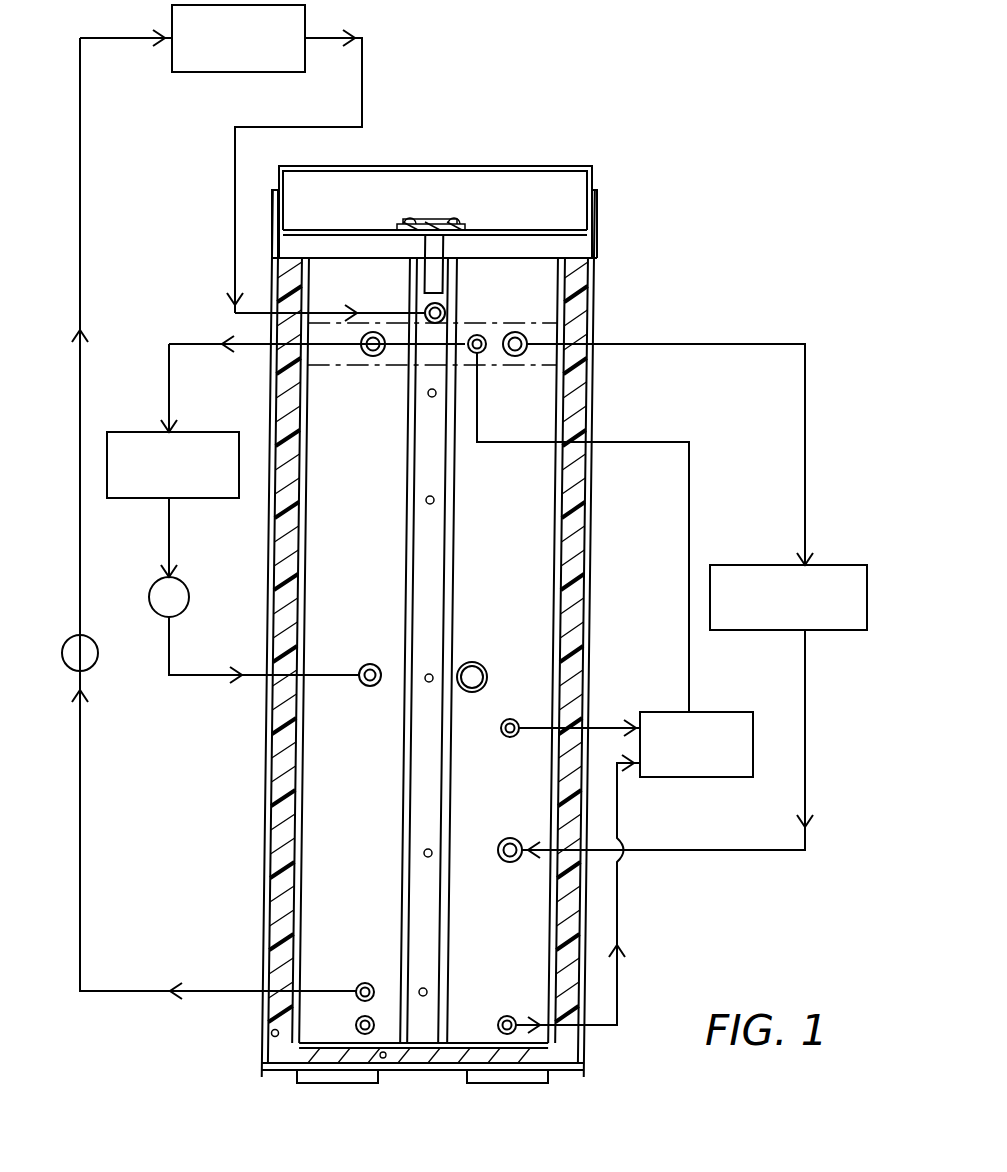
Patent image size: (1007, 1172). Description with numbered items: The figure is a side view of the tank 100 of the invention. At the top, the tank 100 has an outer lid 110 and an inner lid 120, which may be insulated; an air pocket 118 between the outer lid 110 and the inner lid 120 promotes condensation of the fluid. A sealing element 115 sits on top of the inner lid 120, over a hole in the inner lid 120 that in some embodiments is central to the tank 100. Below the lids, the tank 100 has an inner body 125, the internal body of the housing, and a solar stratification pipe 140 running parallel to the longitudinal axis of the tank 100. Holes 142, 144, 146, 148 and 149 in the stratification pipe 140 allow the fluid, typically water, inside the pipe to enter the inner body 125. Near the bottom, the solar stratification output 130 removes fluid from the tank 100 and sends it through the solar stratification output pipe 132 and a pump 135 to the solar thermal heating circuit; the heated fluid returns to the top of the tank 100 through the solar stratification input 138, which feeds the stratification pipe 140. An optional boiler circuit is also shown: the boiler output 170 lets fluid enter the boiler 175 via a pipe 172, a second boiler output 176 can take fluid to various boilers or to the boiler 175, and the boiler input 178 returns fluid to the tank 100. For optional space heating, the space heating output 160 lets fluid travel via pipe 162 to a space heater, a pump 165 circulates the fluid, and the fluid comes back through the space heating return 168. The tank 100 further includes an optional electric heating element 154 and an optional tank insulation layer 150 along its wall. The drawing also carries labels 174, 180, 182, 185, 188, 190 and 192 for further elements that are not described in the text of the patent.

The tank 100 is at (615, 158).
The outer lid 110 is at (380, 168).
The sealing element 115 is at (440, 218).
The air pocket 118 is at (433, 185).
The inner lid 120 is at (320, 232).
The inner body 125 is at (330, 793).
The solar stratification output 130 is at (370, 984).
The solar stratification output pipe 132 is at (82, 865).
The pump 135 is at (98, 660).
The solar stratification input 138 is at (444, 306).
The solar stratification pipe 140 is at (430, 465).
The hole 142 is at (432, 397).
The hole 144 is at (434, 500).
The hole 146 is at (430, 682).
The hole 148 is at (432, 856).
The hole 149 is at (427, 991).
The tank insulation layer 150 is at (582, 556).
The electric heating element 154 is at (474, 670).
The space heating output 160 is at (373, 358).
The pipe 162 is at (169, 385).
The pump 165 is at (188, 600).
The space heating return 168 is at (370, 663).
The boiler output 170 is at (512, 718).
The pipe 172 is at (605, 725).
The boiler return inlet 174 is at (570, 1030).
The boiler 175 is at (705, 712).
The boiler output 176 is at (357, 1024).
The boiler input 178 is at (485, 365).
The domestic hot water outlet 180 is at (527, 338).
The domestic hot water supply line 182 is at (762, 344).
The domestic hot water load 185 is at (840, 565).
The domestic hot water return inlet 188 is at (510, 838).
The left support foot 190 is at (330, 1082).
The right support foot 192 is at (510, 1082).